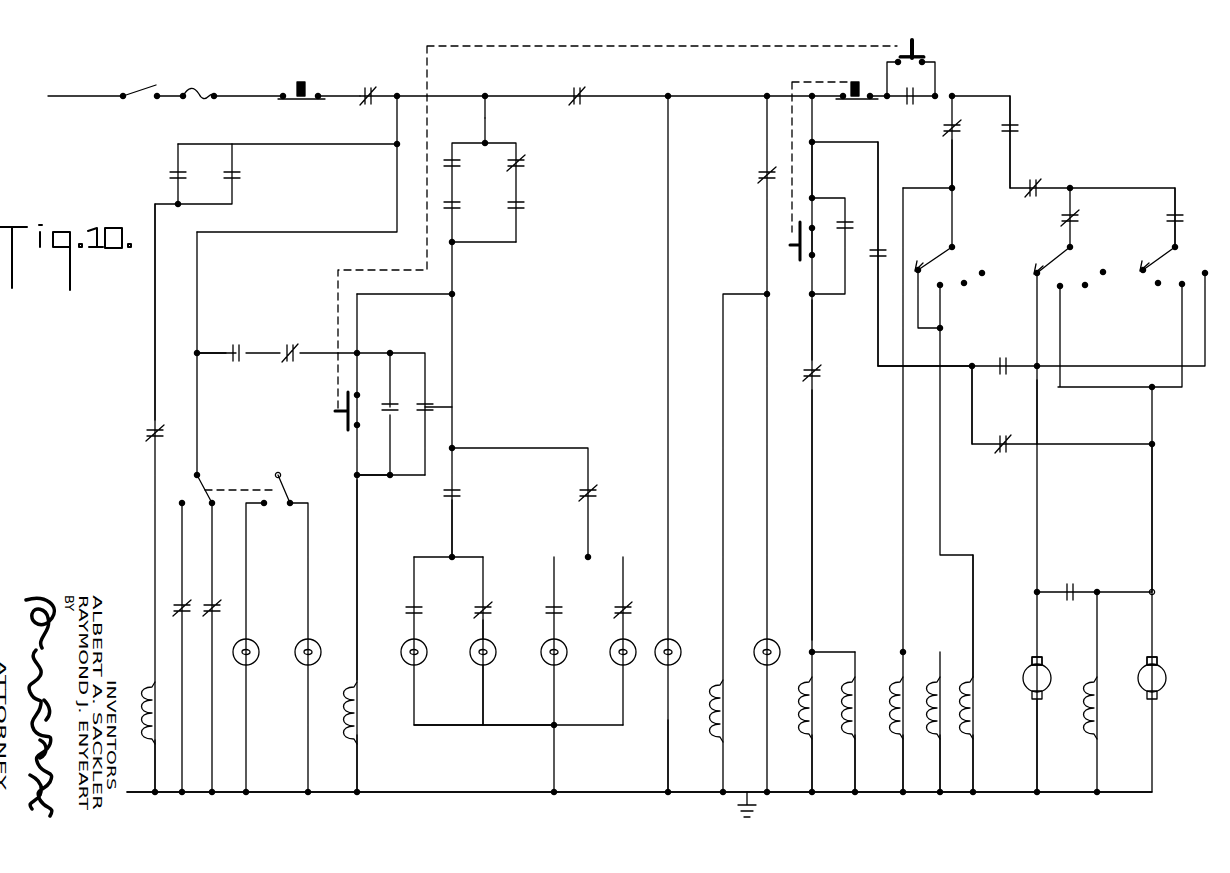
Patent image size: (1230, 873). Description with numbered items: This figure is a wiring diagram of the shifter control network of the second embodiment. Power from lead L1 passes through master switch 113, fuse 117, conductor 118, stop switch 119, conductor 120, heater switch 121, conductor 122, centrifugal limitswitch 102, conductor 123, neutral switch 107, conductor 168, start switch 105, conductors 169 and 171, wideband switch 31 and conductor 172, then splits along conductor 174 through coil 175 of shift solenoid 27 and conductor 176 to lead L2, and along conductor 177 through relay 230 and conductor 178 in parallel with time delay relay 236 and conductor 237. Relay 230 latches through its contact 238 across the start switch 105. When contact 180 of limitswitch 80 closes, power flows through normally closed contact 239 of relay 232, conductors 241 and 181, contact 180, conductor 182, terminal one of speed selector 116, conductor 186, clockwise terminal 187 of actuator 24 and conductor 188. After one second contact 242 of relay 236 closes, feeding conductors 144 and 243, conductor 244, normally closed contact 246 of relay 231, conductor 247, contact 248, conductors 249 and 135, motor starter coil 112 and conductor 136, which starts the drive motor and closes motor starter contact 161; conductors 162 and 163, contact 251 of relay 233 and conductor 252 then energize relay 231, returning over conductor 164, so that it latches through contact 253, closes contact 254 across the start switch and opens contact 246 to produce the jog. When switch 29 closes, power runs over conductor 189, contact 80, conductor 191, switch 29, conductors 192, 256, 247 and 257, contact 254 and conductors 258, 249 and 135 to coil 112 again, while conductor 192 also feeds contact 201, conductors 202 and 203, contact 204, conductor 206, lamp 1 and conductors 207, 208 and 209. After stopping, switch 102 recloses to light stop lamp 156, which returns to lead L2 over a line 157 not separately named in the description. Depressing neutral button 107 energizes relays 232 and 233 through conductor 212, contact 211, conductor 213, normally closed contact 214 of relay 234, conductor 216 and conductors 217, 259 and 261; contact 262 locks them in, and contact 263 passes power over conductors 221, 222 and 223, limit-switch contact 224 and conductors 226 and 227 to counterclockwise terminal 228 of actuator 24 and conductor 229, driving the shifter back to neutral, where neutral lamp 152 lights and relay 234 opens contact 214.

The lead L1 is at (62, 88).
The lead L2 is at (138, 798).
The master switch 113 is at (138, 81).
The fuse 117 is at (200, 90).
The conductor 118 is at (260, 90).
The stop switch 119 is at (308, 80).
The conductor 120 is at (342, 94).
The heater switch 121 is at (376, 86).
The conductor 144 is at (394, 124).
The conductor 162 is at (303, 148).
The motor starter contact 161 is at (168, 176).
The normally open contact 253 is at (243, 176).
The conductor 163 is at (144, 303).
The conductor 122 is at (487, 96).
The conductor 189 is at (486, 118).
The centrifugal limitswitch 102 is at (580, 90).
The conductor 123 is at (656, 94).
The limitswitch 80 is at (462, 166).
The conductor 191 is at (446, 187).
The switch 29 is at (502, 204).
The conductor 192 is at (450, 237).
The contact 242 is at (230, 346).
The conductor 243 is at (224, 360).
The conductor 244 is at (282, 346).
The normally closed contact 246 is at (289, 360).
The conductor 247 is at (316, 350).
The conductor 256 is at (386, 294).
The normally open contact 254 is at (375, 404).
The conductor 257 is at (421, 398).
The contact 248 is at (439, 404).
The conductor 258 is at (392, 442).
The conductor 249 is at (408, 475).
The start switch 105 is at (340, 436).
The contact 251 is at (146, 433).
The conductor 252 is at (153, 515).
The conductor 135 is at (358, 544).
The normally open contact 201 is at (463, 494).
The conductor 202 is at (461, 524).
The conductor 203 is at (484, 566).
The contact 204 is at (489, 604).
The conductor 206 is at (486, 634).
The lamp 1 is at (496, 652).
The conductor 207 is at (486, 696).
The conductor 208 is at (512, 728).
The conductor 209 is at (554, 734).
The stop lamp 156 is at (656, 644).
The conductor 157 is at (670, 734).
The relay 234 is at (726, 726).
The neutral lamp 152 is at (764, 638).
The neutral switch 107 is at (866, 70).
The conductor 169 is at (972, 96).
The conductor 171 is at (956, 114).
The contact 238 is at (910, 104).
The wideband limitswitch 31 is at (960, 132).
The conductor 168 is at (896, 102).
The conductor 221 is at (878, 158).
The conductor 172 is at (954, 162).
The conductor 177 is at (942, 186).
The normally closed contact 239 is at (1034, 180).
The conductor 241 is at (1074, 184).
The conductor 181 is at (1084, 210).
The normally closed contact 180 is at (1084, 218).
The conductor 182 is at (1082, 228).
The conductor 212 is at (814, 156).
The contact 262 is at (856, 224).
The contact 211 is at (814, 252).
The normally open contact 263 is at (872, 264).
The conductor 213 is at (812, 346).
The normally closed contact 214 is at (822, 376).
The conductor 222 is at (880, 344).
The conductor 216 is at (816, 444).
The conductor 223 is at (976, 394).
The conductor 186 is at (1038, 420).
The conductor 226 is at (1096, 444).
The conductor 174 is at (946, 428).
The limit-switch contact 224 is at (1002, 470).
The conductor 227 is at (1152, 510).
The speed selector 116 is at (1104, 328).
The conductor 259 is at (843, 648).
The relay 233 is at (853, 684).
The relay 230 is at (898, 688).
The relay 232 is at (812, 678).
The time delay relay 236 is at (944, 668).
The coil 175 is at (982, 672).
The shift solenoid 27 is at (988, 705).
The clockwise terminal 187 is at (1032, 656).
The actuator 24 is at (1044, 708).
The counterclockwise terminal 228 is at (1140, 656).
The conductor 229 is at (1144, 728).
The conductor 217 is at (814, 748).
The conductor 261 is at (858, 750).
The conductor 178 is at (905, 750).
The conductor 237 is at (942, 748).
The conductor 176 is at (976, 774).
The conductor 188 is at (1040, 768).
The relay 231 is at (152, 688).
The conductor 164 is at (154, 770).
The motor starter coil 112 is at (364, 698).
The conductor 136 is at (360, 760).